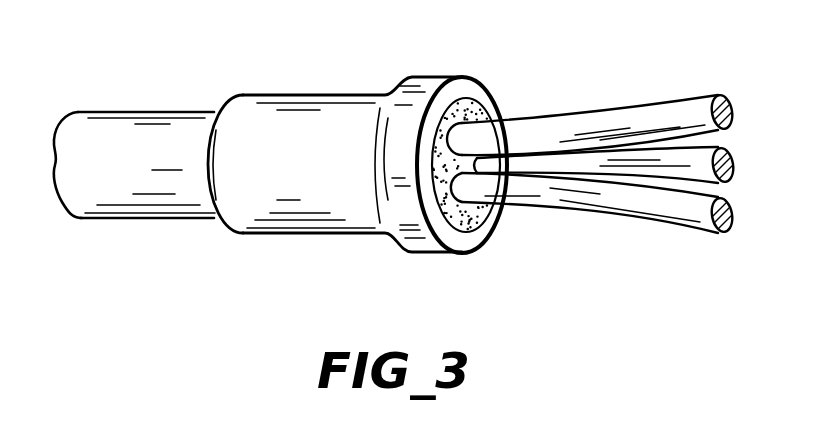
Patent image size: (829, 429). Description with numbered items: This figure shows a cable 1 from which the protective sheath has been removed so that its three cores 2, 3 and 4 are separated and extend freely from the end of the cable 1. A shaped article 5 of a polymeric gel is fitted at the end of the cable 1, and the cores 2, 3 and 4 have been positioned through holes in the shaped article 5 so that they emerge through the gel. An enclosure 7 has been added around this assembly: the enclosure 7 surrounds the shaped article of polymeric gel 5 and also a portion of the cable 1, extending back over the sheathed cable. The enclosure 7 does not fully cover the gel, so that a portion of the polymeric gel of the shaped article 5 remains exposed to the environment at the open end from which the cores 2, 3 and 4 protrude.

The cable 1 is at (172, 112).
The core 2 is at (580, 130).
The core 3 is at (637, 163).
The core 4 is at (538, 197).
The shaped article of polymeric gel 5 is at (477, 97).
The enclosure 7 is at (310, 195).